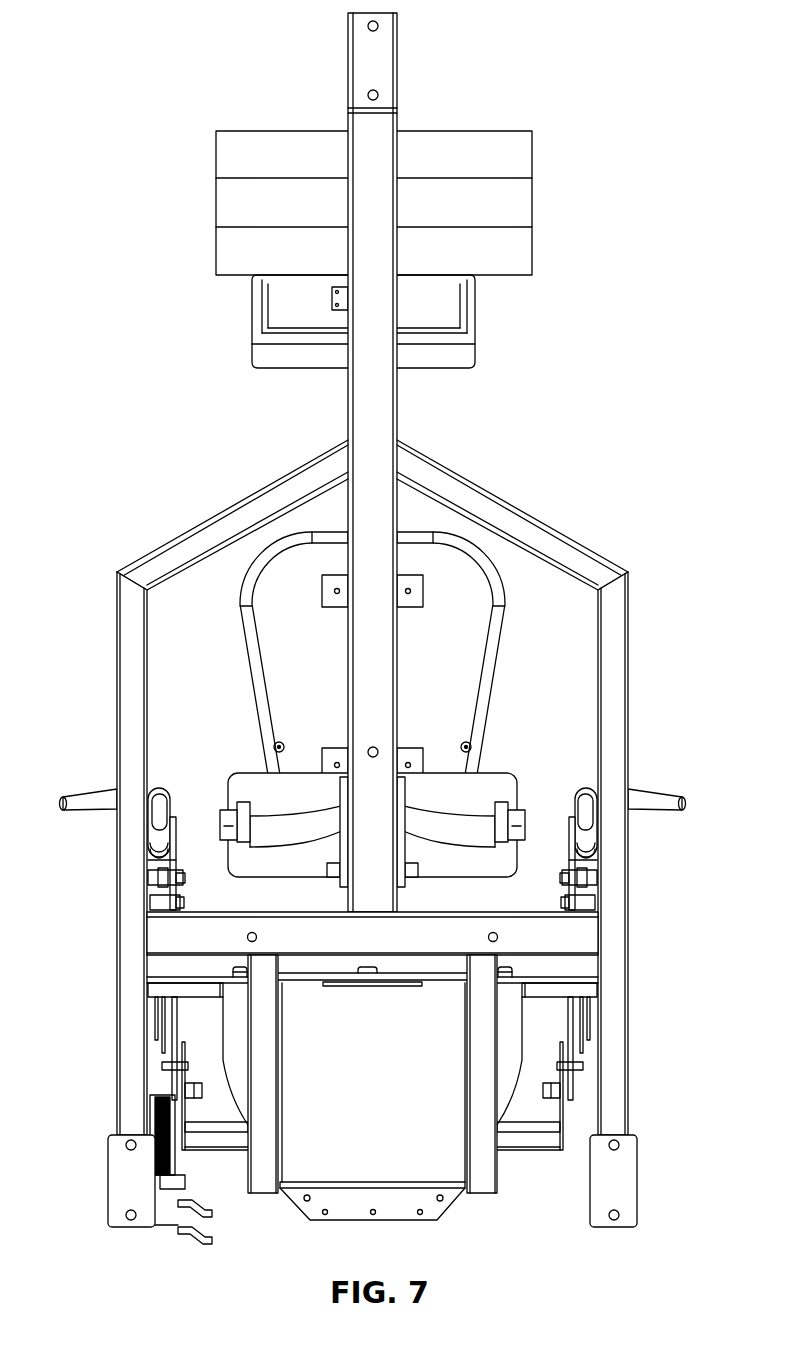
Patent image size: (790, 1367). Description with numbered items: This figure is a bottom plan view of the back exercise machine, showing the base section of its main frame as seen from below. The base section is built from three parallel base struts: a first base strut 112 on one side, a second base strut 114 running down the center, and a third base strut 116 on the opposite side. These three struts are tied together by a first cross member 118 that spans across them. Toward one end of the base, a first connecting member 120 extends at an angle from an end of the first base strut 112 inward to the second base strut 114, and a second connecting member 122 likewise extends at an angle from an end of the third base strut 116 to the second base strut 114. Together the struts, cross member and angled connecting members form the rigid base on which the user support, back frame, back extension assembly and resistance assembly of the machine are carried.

The first base strut 112 is at (130, 712).
The second base strut 114 is at (380, 424).
The third base strut 116 is at (614, 712).
The first cross member 118 is at (582, 940).
The first connecting member 120 is at (225, 523).
The second connecting member 122 is at (520, 525).